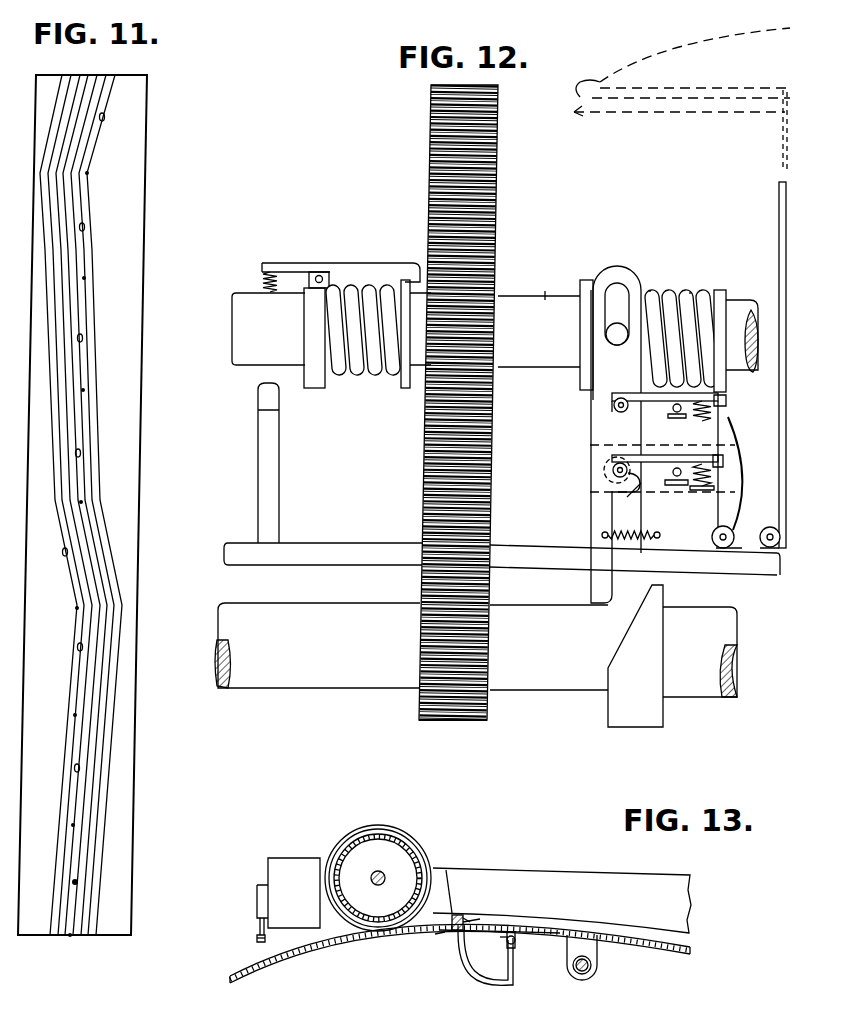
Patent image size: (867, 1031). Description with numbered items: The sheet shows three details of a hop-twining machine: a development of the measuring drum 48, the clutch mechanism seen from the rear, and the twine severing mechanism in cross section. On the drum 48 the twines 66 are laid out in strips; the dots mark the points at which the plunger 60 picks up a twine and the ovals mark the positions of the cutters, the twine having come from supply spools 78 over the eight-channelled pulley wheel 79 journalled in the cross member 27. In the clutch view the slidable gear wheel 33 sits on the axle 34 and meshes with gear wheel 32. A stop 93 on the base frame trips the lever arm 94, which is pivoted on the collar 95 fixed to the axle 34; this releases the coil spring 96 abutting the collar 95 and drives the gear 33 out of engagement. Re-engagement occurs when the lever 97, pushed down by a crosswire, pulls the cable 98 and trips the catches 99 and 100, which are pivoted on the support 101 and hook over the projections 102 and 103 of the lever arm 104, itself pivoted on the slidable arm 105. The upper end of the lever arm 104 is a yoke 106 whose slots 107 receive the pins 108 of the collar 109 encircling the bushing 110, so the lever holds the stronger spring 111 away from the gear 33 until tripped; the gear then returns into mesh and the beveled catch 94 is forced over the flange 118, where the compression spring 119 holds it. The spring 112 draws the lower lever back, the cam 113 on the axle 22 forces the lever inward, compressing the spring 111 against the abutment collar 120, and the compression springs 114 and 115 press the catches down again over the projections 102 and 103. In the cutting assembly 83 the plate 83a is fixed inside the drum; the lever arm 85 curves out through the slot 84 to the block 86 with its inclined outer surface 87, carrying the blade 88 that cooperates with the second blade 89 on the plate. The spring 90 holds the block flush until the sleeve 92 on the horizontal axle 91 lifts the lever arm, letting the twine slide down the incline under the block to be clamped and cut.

In FIG. 12, the axle 22 is at (562, 686).
In FIG. 13, the side frame 27 is at (681, 890).
In FIG. 12, the gear wheel 32 is at (489, 712).
In FIG. 12, the slidable gear wheel 33 is at (498, 246).
In FIG. 12, the axle 34 is at (546, 293).
In FIG. 11, the measuring drum 48 is at (142, 198).
In FIG. 13, the measuring drum 48 is at (383, 940).
In FIG. 13, the flexible metallic plunger 60 is at (257, 928).
In FIG. 11, the twines 66 is at (113, 86).
In FIG. 13, the supply spools 78 is at (257, 940).
In FIG. 13, the pulley wheel 79 is at (417, 842).
In FIG. 13, the cutting assembly 83 is at (518, 938).
In FIG. 13, the plate 83a is at (445, 937).
In FIG. 13, the slot 84 is at (482, 917).
In FIG. 13, the lever arm 85 is at (497, 979).
In FIG. 13, the block 86 is at (455, 915).
In FIG. 13, the inclined outer surface 87 is at (453, 915).
In FIG. 13, the blade 88 is at (467, 922).
In FIG. 13, the second blade 89 is at (480, 918).
In FIG. 13, the spring 90 is at (495, 947).
In FIG. 13, the horizontal axle 91 is at (582, 982).
In FIG. 13, the rotatable sleeve 92 is at (592, 965).
In FIG. 12, the stop 93 is at (272, 458).
In FIG. 12, the lever arm 94 is at (311, 266).
In FIG. 12, the collar 95 is at (314, 388).
In FIG. 12, the coil spring 96 is at (362, 373).
In FIG. 12, the lever 97 is at (590, 82).
In FIG. 12, the cable 98 is at (780, 197).
In FIG. 12, the catch 99 is at (611, 401).
In FIG. 12, the catch 100 is at (603, 463).
In FIG. 12, the support 101 is at (737, 523).
In FIG. 12, the projection 102 is at (615, 414).
In FIG. 12, the projection 103 is at (625, 494).
In FIG. 12, the lever arm 104 is at (592, 525).
In FIG. 12, the slidable arm 105 is at (652, 487).
In FIG. 12, the yoke 106 is at (626, 290).
In FIG. 12, the slots 107 is at (609, 278).
In FIG. 12, the pins 108 is at (612, 343).
In FIG. 12, the collar 109 is at (647, 292).
In FIG. 12, the bushing 110 is at (581, 384).
In FIG. 12, the spring 111 is at (690, 292).
In FIG. 12, the spring 112 is at (650, 535).
In FIG. 12, the cam 113 is at (641, 722).
In FIG. 12, the compression spring 114 is at (725, 410).
In FIG. 12, the compression spring 115 is at (730, 476).
In FIG. 12, the flange 118 is at (402, 390).
In FIG. 12, the compression spring 119 is at (262, 280).
In FIG. 12, the abutment collar 120 is at (728, 292).